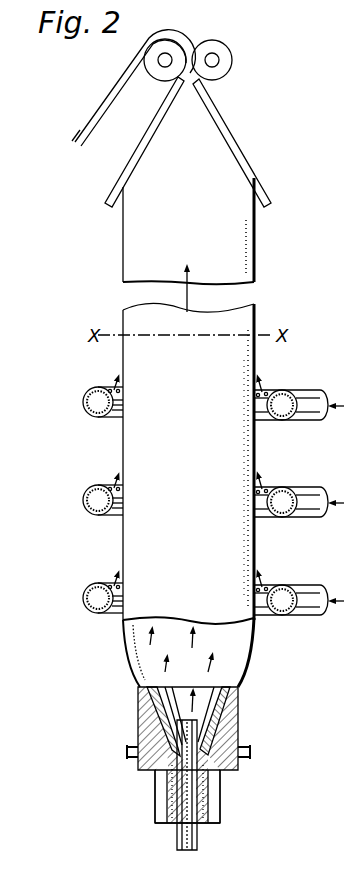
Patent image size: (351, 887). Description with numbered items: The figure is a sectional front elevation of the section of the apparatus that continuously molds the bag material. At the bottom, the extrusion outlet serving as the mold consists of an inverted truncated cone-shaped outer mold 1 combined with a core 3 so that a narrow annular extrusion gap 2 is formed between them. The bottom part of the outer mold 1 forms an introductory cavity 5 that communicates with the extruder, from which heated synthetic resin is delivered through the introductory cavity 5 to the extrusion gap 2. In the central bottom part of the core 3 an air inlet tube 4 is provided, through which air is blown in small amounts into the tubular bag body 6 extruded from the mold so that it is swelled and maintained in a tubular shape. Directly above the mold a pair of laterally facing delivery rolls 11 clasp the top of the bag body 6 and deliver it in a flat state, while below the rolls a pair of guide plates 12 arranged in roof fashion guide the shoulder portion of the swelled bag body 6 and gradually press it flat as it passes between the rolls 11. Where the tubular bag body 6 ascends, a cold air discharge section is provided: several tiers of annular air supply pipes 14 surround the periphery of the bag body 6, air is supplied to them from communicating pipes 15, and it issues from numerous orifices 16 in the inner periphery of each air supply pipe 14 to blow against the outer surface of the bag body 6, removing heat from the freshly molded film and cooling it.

The outer mold 1 is at (138, 722).
The extrusion gap 2 is at (150, 696).
The core 3 is at (228, 695).
The air inlet tube 4 is at (177, 840).
The introductory cavity 5 is at (155, 798).
The bag body 6 is at (120, 72).
The delivery rolls 11 is at (164, 40).
The guide plates 12 is at (134, 128).
The air supply pipes 14 is at (90, 400).
The communicating pipes 15 is at (306, 395).
The orifices 16 is at (262, 394).